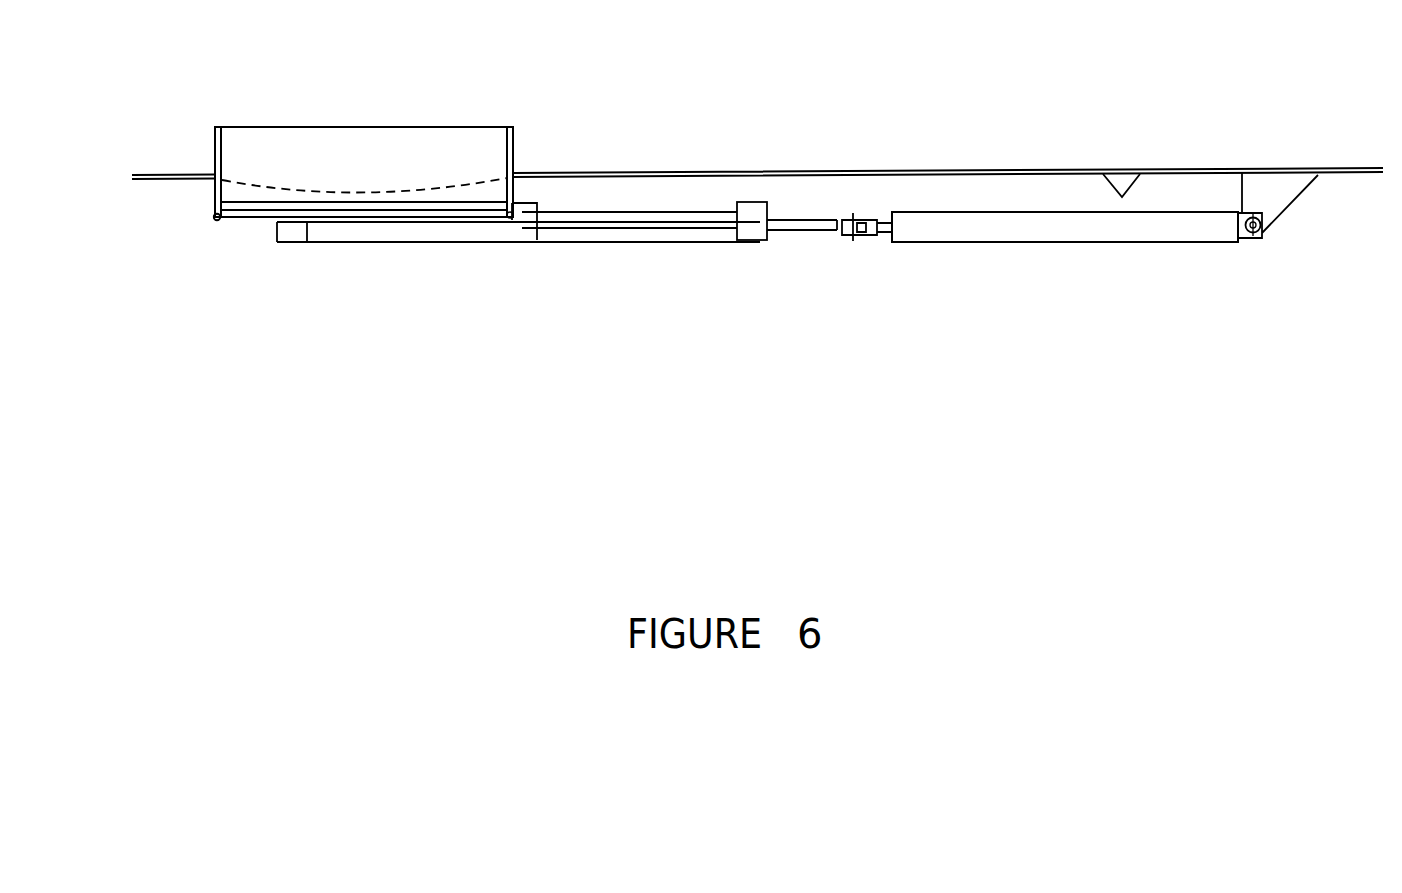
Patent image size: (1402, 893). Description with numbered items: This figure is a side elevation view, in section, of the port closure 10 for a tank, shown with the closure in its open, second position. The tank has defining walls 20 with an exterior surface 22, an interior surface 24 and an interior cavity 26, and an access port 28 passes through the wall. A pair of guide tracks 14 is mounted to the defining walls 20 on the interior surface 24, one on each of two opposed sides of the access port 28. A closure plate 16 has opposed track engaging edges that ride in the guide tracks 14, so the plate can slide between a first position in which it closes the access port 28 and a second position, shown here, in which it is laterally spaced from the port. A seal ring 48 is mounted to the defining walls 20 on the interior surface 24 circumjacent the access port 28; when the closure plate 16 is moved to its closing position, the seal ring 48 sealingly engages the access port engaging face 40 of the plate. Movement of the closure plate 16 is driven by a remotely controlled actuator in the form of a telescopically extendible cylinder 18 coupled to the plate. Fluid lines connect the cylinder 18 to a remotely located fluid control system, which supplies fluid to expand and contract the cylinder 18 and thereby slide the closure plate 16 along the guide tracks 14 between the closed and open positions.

The port closure 10 is at (343, 270).
The guide tracks 14 is at (687, 240).
The closure plate 16 is at (698, 197).
The telescopically extendible cylinder 18 is at (1115, 232).
The defining walls 20 is at (925, 172).
The exterior surface 22 is at (1090, 172).
The interior surface 24 is at (1140, 175).
The interior cavity 26 is at (920, 302).
The access port 28 is at (220, 127).
The access port engaging face 40 is at (637, 218).
The seal ring 48 is at (215, 216).